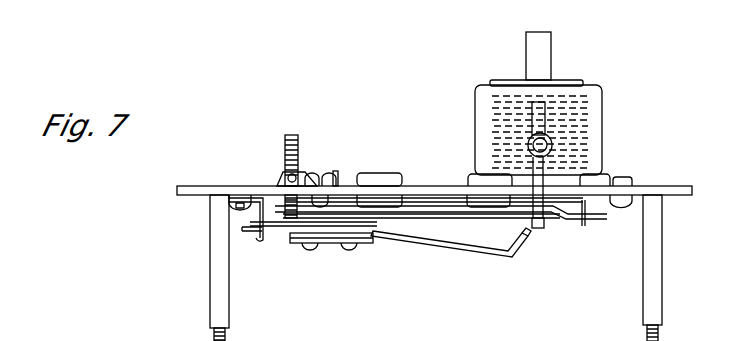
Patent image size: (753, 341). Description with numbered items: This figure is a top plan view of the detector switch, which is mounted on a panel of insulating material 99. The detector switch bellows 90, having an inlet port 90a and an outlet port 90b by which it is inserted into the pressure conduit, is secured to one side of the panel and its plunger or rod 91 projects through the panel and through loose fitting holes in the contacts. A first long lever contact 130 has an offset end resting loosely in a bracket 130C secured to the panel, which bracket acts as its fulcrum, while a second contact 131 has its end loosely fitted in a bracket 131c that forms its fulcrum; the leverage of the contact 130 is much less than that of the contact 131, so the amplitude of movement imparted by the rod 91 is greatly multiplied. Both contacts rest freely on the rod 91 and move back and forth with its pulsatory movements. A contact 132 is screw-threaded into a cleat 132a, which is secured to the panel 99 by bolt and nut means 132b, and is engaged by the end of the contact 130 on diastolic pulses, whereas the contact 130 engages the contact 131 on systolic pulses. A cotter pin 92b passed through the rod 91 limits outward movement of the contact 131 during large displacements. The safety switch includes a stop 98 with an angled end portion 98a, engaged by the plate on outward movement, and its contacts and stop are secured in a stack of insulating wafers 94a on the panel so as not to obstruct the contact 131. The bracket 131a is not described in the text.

The detector switch bellows 90 is at (609, 104).
The inlet port 90a is at (543, 53).
The outlet port 90b is at (553, 148).
The plunger or rod 91 is at (538, 230).
The cotter pin 92b is at (546, 220).
The stack of insulating wafers 94a is at (326, 244).
The stop 98 is at (423, 244).
The angled end portion 98a is at (521, 251).
The panel of insulating material 99 is at (675, 189).
The contact 130 is at (285, 214).
The bracket 130C is at (578, 228).
The contact 131 is at (285, 228).
The link arm 131a is at (250, 233).
The bracket 131c is at (258, 214).
The contact 132 is at (298, 162).
The cleat 132a is at (273, 174).
The bolt and nut means 132b is at (332, 176).